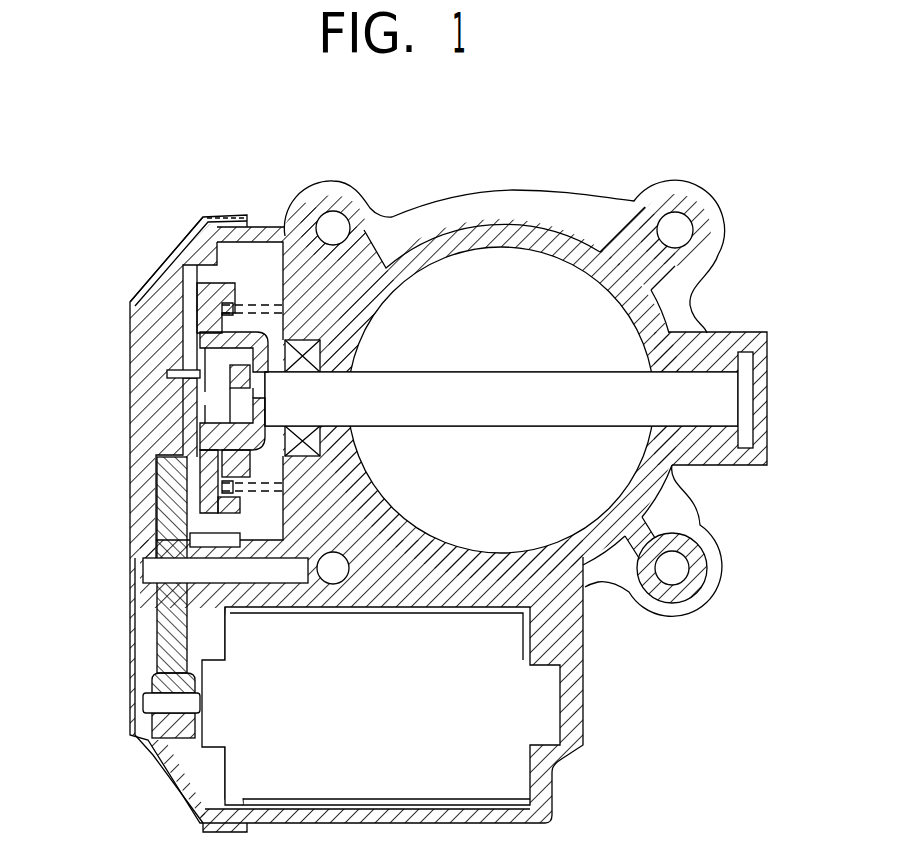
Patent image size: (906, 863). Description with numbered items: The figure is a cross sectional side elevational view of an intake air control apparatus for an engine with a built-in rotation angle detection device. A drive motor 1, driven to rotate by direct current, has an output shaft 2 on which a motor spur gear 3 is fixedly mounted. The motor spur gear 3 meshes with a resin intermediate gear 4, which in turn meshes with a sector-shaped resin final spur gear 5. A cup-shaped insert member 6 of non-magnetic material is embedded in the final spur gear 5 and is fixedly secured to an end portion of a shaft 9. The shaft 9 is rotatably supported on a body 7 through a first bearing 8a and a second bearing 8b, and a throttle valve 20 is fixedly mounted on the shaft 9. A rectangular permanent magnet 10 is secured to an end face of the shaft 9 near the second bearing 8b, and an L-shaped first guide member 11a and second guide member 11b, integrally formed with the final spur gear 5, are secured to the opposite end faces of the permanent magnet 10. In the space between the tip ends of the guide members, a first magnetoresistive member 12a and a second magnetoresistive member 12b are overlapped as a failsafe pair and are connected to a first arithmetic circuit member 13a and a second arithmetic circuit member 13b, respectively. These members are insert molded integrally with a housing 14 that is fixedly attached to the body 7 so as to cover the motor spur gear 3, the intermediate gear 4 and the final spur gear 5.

The drive motor 1 is at (503, 775).
The output shaft 2 is at (160, 705).
The motor spur gear 3 is at (150, 690).
The intermediate gear 4 is at (165, 622).
The final spur gear 5 is at (137, 293).
The insert member 6 is at (200, 323).
The body 7 is at (540, 230).
The first bearing 8a is at (727, 430).
The second bearing 8b is at (360, 214).
The shaft 9 is at (650, 398).
The permanent magnet 10 is at (213, 343).
The first guide member 11a is at (195, 433).
The second guide member 11b is at (203, 332).
The first magnetoresistive member 12a is at (240, 390).
The second magnetoresistive member 12b is at (200, 403).
The first arithmetic circuit member 13a is at (225, 420).
The second arithmetic circuit member 13b is at (230, 370).
The housing 14 is at (132, 566).
The throttle valve 20 is at (480, 278).